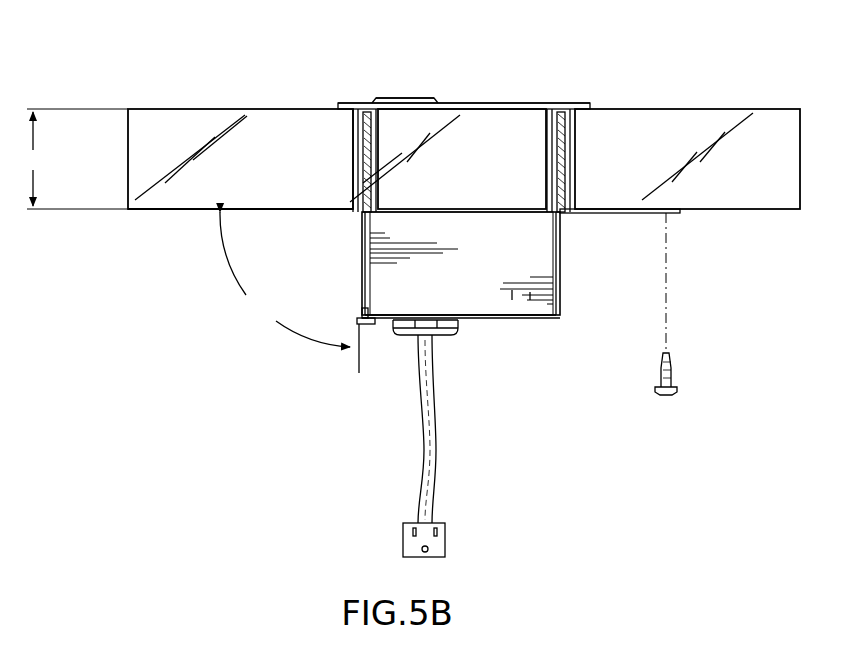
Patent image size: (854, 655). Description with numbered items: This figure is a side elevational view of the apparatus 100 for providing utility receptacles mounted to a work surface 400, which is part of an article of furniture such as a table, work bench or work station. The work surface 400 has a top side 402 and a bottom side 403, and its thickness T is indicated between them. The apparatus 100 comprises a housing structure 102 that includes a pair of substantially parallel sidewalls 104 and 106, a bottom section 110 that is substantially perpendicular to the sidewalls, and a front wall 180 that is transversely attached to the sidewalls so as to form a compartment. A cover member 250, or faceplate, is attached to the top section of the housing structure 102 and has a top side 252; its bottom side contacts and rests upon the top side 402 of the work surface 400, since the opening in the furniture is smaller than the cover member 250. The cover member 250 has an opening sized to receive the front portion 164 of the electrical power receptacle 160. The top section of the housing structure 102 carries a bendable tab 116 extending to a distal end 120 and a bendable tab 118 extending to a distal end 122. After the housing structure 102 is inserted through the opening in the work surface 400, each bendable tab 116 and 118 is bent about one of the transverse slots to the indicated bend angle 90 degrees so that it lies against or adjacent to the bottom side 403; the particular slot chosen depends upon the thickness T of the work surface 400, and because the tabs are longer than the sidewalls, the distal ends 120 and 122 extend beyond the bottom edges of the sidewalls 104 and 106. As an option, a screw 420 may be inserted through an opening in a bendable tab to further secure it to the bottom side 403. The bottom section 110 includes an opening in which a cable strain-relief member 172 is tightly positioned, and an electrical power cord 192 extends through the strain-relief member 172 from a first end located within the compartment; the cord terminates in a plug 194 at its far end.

The apparatus 100 is at (497, 324).
The housing structure 102 is at (512, 290).
The sidewall 104 is at (565, 288).
The sidewall 106 is at (359, 350).
The bottom section 110 is at (462, 320).
The bendable tab 116 is at (615, 213).
The bendable tab 118 is at (370, 237).
The distal end 120 is at (680, 213).
The distal end 122 is at (360, 330).
The electrical power receptacle 160 is at (400, 98).
The front portion 164 is at (420, 98).
The cable strain-relief member 172 is at (405, 337).
The front wall 180 is at (530, 292).
The electrical power cord 192 is at (418, 475).
The plug 194 is at (445, 535).
The cover member 250 is at (466, 101).
The top side 252 is at (532, 103).
The work surface 400 is at (180, 109).
The top side 402 is at (705, 109).
The bottom side 403 is at (153, 209).
The screw 420 is at (672, 384).
The 90 degree angle 90 is at (285, 279).
The thickness T is at (77, 159).